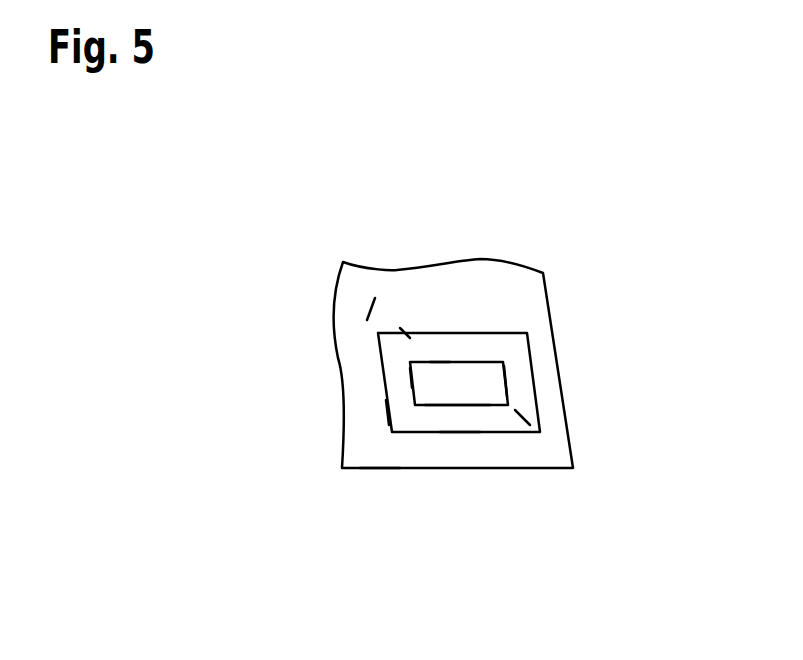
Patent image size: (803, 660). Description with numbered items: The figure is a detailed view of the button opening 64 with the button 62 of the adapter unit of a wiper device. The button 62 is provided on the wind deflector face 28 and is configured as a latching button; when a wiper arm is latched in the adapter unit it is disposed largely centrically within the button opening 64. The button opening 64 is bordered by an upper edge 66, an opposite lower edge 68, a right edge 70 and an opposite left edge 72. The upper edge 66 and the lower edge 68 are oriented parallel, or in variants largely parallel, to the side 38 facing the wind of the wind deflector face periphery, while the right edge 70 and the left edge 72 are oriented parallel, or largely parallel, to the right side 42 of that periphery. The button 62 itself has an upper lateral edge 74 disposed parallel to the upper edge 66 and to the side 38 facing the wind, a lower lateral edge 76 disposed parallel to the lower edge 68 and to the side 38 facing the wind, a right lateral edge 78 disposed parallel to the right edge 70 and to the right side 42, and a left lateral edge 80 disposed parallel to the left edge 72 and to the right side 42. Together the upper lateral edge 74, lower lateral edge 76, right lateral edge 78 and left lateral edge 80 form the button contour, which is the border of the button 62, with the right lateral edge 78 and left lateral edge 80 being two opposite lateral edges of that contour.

The wind deflector face 28 is at (367, 320).
The side facing the wind 38 is at (382, 470).
The right side 42 is at (550, 308).
The button 62 is at (482, 393).
The button opening 64 is at (522, 418).
The upper edge 66 is at (405, 333).
The lower edge 68 is at (460, 432).
The right edge 70 is at (542, 420).
The left edge 72 is at (388, 412).
The upper lateral edge 74 is at (438, 362).
The lower lateral edge 76 is at (430, 405).
The right lateral edge 78 is at (505, 375).
The left lateral edge 80 is at (408, 377).